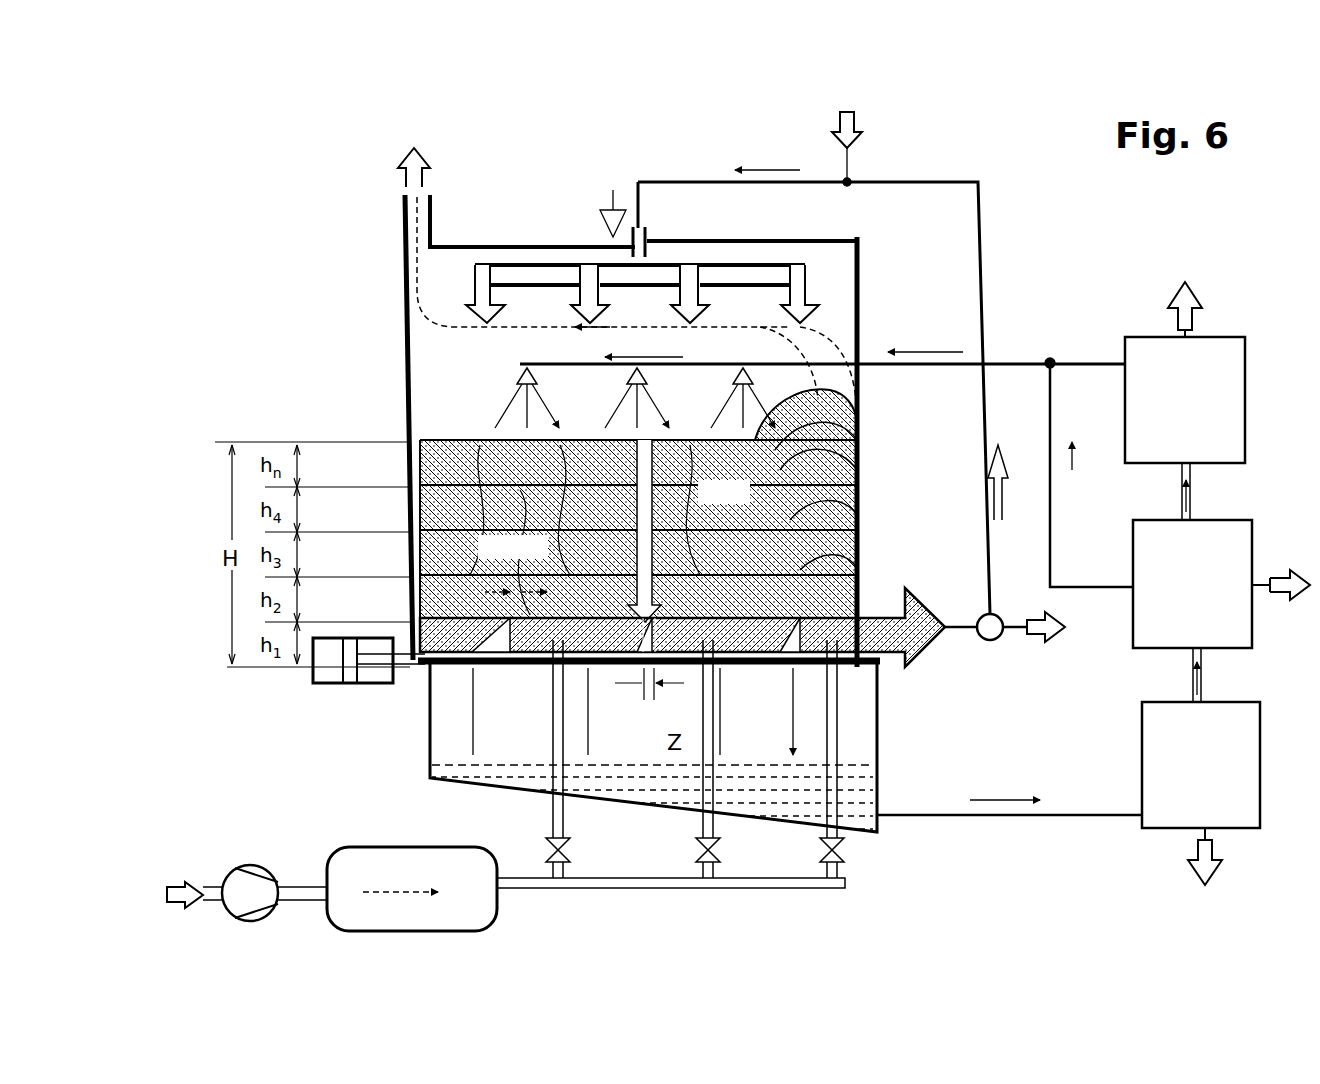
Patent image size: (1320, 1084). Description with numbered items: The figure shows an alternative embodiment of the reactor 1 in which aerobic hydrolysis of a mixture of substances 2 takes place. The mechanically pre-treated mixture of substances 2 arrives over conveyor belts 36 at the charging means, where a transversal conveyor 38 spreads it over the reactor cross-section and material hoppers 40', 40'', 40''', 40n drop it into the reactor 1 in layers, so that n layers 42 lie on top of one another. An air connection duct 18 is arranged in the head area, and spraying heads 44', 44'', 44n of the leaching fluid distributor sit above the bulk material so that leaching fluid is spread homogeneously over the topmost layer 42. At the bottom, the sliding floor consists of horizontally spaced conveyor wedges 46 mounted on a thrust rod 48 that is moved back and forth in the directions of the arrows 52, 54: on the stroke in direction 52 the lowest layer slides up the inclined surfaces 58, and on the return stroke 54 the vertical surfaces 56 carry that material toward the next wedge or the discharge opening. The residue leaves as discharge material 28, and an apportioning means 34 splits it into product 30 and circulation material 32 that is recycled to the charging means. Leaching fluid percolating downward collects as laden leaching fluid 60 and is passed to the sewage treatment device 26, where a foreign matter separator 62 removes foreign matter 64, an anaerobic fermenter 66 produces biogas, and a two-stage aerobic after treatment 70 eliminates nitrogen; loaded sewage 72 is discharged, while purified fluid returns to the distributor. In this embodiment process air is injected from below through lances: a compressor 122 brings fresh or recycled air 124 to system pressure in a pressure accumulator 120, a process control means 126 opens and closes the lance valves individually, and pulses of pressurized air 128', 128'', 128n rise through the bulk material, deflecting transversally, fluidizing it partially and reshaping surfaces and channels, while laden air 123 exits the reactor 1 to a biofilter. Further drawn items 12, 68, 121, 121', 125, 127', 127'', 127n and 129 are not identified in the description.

The reactor 1 is at (860, 262).
The mixture of substances 2 is at (862, 125).
The material layers 12 is at (435, 352).
The air connection duct 18 is at (430, 222).
The sewage treatment device 26 is at (1086, 521).
The discharge material 28 is at (927, 592).
The product 30 is at (1045, 646).
The circulation material 32 is at (995, 492).
The apportioning means 34 is at (990, 642).
The conveyor belts 36 is at (688, 182).
The transversal conveyor 38 is at (548, 263).
The material hopper 40' is at (468, 291).
The material hopper 40'' is at (562, 294).
The material hopper 40''' is at (660, 294).
The material hopper 40n is at (786, 298).
The layers 42 is at (420, 458).
The spraying head 44' is at (498, 398).
The spraying head 44'' is at (617, 398).
The spraying head 44n is at (735, 380).
The conveyor wedges 46 is at (500, 642).
The thrust rod 48 is at (412, 680).
The arrow 52 is at (513, 563).
The arrow 54 is at (532, 563).
The vertical surfaces 56 is at (532, 662).
The inclined surfaces 58 is at (425, 612).
The laden leaching fluid 60 is at (860, 774).
The foreign matter separator 62 is at (1068, 738).
The foreign matter 64 is at (1188, 865).
The anaerobic fermenter 66 is at (1192, 555).
The outlet 68 is at (1292, 602).
The two-stage aerobic after treatment 70 is at (1185, 400).
The loaded sewage 72 is at (1168, 303).
The pressure accumulator 120 is at (178, 880).
The gas flow 121 is at (366, 849).
The gas flow in bed 121' is at (823, 416).
The compressor 122 is at (548, 332).
The laden air 123 is at (428, 175).
The air 124 is at (248, 866).
The buffer tank 125 is at (410, 848).
The process control means 126 is at (848, 882).
The valve 127' is at (494, 836).
The valve 127'' is at (664, 858).
The valve 127n is at (822, 850).
The pressurized air 128' is at (605, 739).
The pressurized air 128'' is at (744, 739).
The pressurized air 128n is at (848, 672).
The material heap 129 is at (835, 397).